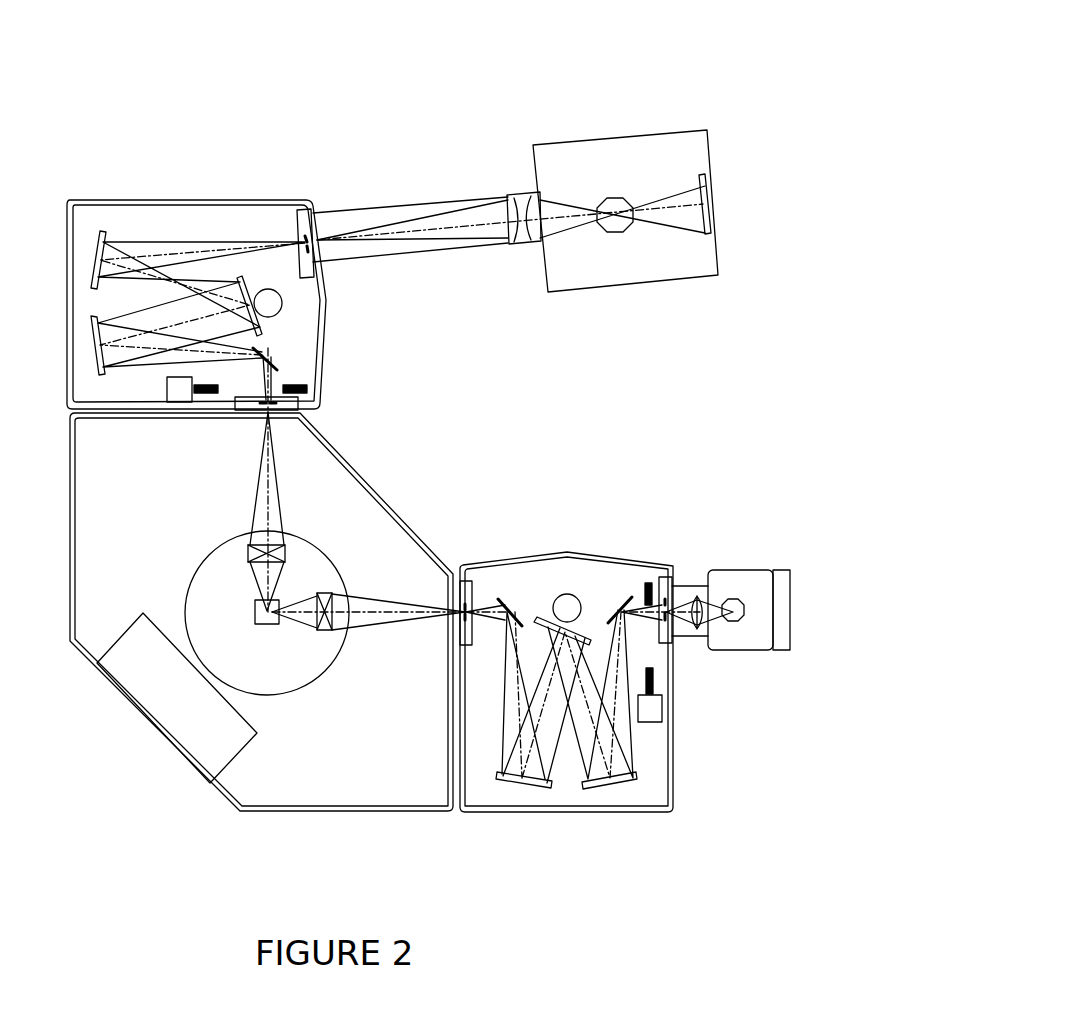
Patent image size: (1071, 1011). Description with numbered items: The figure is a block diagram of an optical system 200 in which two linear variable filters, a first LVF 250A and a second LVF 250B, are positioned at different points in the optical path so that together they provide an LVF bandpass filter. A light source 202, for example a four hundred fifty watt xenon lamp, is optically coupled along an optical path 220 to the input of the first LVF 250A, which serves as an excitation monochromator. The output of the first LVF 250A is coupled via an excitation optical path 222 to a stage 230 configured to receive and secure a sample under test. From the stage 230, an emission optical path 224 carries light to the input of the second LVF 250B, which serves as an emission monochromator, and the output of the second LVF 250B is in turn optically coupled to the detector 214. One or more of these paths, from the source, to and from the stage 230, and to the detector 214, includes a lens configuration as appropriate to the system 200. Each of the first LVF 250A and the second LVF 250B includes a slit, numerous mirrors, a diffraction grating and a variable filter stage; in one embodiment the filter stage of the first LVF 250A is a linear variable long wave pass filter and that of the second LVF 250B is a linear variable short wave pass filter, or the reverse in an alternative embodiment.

The optical system 200 is at (411, 64).
The light source 202 is at (630, 140).
The optical path from the light source 220 is at (421, 258).
The excitation beam to sample 222 is at (253, 468).
The excitation optical path / emission optical path 224 is at (390, 627).
The stage 230 is at (192, 558).
The detector 214 is at (755, 548).
The first LVF 250A is at (325, 194).
The second LVF 250B is at (684, 770).